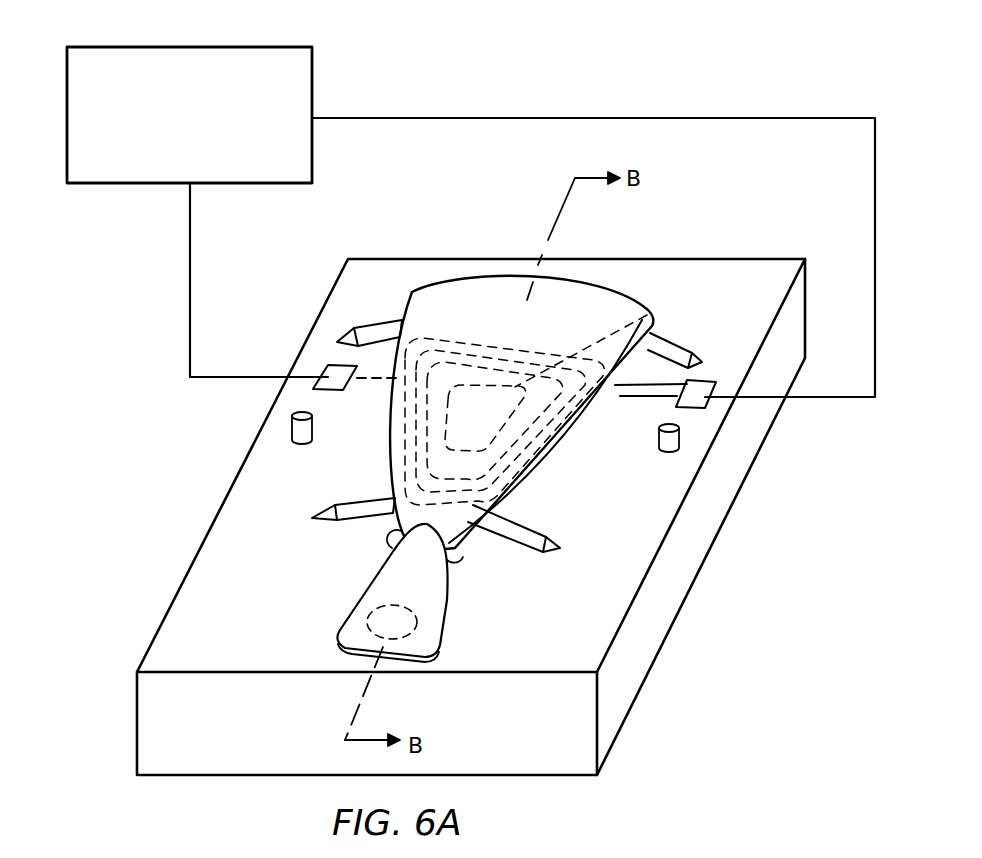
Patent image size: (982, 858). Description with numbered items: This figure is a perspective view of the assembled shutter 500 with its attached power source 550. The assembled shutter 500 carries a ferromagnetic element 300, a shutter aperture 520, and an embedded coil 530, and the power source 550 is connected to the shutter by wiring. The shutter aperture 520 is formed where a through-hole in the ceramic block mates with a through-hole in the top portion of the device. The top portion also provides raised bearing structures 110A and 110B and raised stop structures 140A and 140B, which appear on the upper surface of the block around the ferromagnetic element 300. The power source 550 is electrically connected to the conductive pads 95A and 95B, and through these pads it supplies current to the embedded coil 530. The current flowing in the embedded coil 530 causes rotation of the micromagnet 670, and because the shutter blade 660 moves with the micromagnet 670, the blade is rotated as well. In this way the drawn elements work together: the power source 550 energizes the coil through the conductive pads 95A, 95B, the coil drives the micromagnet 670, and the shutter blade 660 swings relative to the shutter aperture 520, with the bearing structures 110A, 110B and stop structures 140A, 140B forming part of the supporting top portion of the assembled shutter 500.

The power source 550 is at (306, 46).
The assembled shutter 500 is at (218, 442).
The ferromagnetic element 300 is at (547, 387).
The embedded coil 530 is at (440, 337).
The conductive pad 95A is at (707, 380).
The conductive pad 95B is at (328, 367).
The raised bearing structure 110A is at (371, 330).
The raised bearing structure 110B is at (343, 508).
The raised stop structure 140A is at (680, 433).
The raised stop structure 140B is at (292, 430).
The shutter blade 660 is at (413, 593).
The micromagnet 670 is at (545, 468).
The shutter aperture 520 is at (353, 603).